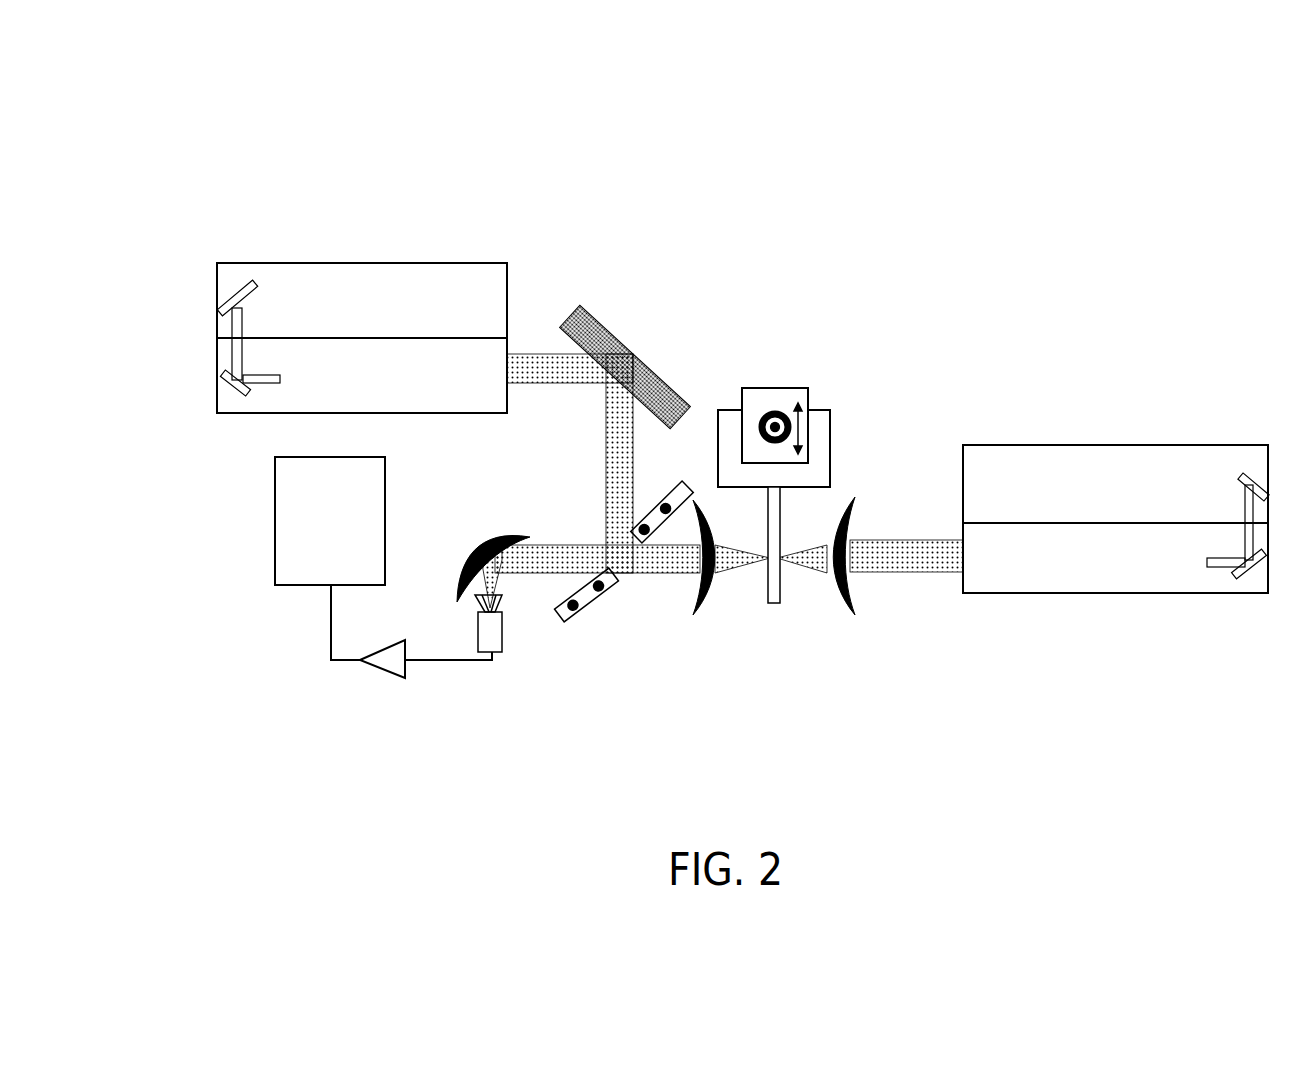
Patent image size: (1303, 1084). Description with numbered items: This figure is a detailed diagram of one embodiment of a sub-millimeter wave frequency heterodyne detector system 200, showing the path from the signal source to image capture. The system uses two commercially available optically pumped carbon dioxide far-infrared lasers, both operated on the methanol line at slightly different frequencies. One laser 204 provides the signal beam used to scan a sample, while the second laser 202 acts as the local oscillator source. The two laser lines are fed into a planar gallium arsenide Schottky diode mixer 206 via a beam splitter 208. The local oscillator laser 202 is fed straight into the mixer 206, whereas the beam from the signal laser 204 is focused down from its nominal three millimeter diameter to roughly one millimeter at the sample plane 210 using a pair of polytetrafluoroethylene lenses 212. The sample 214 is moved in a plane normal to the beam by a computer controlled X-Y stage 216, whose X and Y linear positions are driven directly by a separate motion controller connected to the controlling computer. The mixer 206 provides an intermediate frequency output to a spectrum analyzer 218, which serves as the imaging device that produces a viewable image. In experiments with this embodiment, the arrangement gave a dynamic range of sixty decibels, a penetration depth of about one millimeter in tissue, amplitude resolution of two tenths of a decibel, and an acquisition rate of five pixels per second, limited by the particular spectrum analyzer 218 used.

The sub-millimeter wave frequency heterodyne detector system 200 is at (748, 175).
The local oscillator laser 202 is at (258, 262).
The signal laser 204 is at (1150, 593).
The mixer 206 is at (505, 637).
The beam splitter 208 is at (613, 578).
The sample plane 210 is at (782, 520).
The lenses 212 is at (713, 593).
The sample 214 is at (790, 410).
The X-Y stage 216 is at (745, 397).
The spectrum analyzer 218 is at (273, 547).